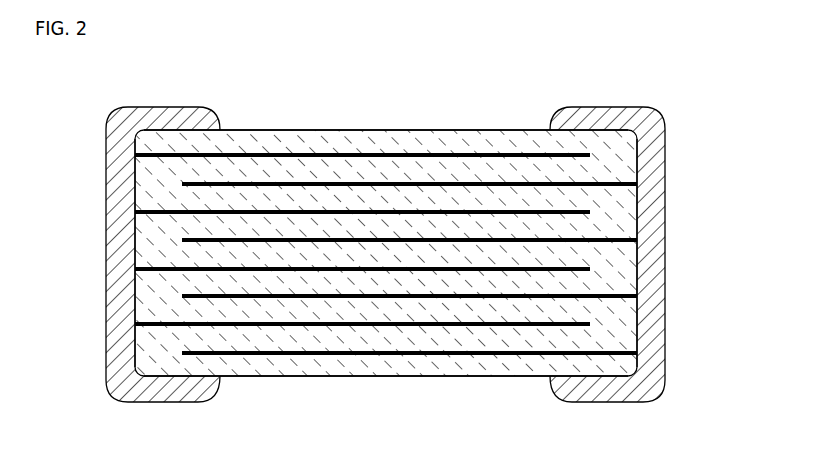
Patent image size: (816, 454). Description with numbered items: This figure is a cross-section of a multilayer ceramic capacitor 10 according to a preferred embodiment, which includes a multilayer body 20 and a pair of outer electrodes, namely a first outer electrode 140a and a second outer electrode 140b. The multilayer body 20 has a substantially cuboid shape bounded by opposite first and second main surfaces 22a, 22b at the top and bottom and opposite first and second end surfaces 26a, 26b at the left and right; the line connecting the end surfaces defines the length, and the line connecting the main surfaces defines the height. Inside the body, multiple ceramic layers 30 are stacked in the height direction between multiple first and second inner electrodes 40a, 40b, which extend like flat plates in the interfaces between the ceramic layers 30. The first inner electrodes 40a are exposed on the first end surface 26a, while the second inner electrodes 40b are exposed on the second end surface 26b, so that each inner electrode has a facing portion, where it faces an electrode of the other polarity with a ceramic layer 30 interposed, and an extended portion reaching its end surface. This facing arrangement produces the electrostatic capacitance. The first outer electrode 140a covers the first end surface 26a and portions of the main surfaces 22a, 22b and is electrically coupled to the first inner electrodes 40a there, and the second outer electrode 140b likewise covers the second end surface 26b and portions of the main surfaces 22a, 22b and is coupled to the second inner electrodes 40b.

The multilayer ceramic capacitor 10 is at (200, 60).
The multilayer body 20 is at (403, 127).
The first main surface 22a is at (268, 130).
The second main surface 22b is at (378, 378).
The first end surface 26a is at (640, 262).
The second end surface 26b is at (135, 270).
The ceramic layers 30 is at (375, 227).
The first inner electrodes 40a is at (595, 237).
The second inner electrodes 40b is at (180, 158).
The first outer electrode 140a is at (668, 153).
The second outer electrode 140b is at (104, 245).